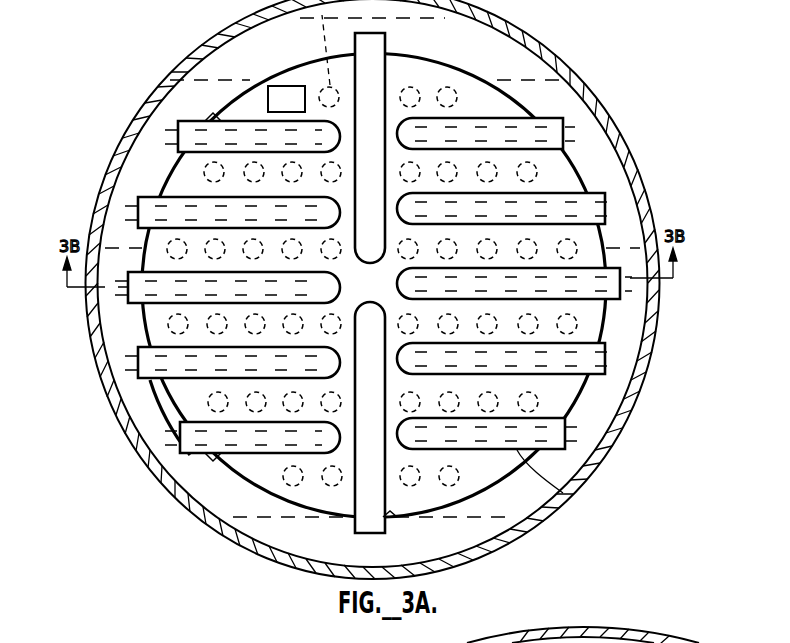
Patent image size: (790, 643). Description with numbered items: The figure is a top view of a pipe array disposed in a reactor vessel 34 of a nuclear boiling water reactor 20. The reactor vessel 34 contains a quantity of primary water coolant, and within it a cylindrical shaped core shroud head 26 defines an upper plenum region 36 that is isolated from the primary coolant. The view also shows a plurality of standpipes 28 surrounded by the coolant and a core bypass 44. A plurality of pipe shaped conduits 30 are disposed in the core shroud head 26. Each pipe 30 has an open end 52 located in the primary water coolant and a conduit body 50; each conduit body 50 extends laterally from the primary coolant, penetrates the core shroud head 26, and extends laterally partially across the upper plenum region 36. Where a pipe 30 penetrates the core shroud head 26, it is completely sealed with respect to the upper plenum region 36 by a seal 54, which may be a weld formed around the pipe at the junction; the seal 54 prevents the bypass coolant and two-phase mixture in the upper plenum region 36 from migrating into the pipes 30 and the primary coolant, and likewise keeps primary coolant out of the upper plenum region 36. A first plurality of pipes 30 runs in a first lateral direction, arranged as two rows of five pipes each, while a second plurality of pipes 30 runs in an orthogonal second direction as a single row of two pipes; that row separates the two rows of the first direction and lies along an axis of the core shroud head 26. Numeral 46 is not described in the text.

The nuclear boiling water reactor 20 is at (203, 520).
The core shroud head 26 is at (483, 487).
The standpipes 28 is at (330, 490).
The pipe shaped conduits 30 is at (152, 197).
The reactor vessel 34 is at (518, 537).
The upper plenum region 36 is at (190, 397).
The core bypass 44 is at (287, 86).
The center support bar 46 is at (133, 292).
The conduit body 50 is at (563, 493).
The open end 52 is at (563, 433).
The seal 54 is at (213, 118).